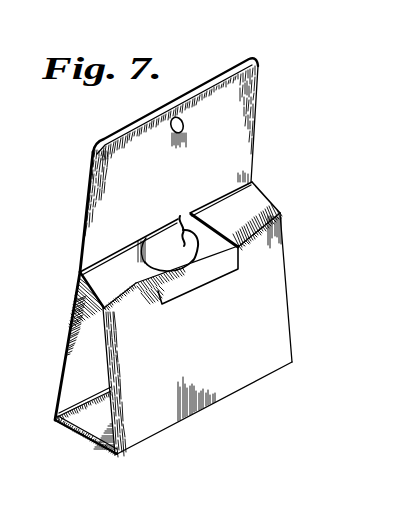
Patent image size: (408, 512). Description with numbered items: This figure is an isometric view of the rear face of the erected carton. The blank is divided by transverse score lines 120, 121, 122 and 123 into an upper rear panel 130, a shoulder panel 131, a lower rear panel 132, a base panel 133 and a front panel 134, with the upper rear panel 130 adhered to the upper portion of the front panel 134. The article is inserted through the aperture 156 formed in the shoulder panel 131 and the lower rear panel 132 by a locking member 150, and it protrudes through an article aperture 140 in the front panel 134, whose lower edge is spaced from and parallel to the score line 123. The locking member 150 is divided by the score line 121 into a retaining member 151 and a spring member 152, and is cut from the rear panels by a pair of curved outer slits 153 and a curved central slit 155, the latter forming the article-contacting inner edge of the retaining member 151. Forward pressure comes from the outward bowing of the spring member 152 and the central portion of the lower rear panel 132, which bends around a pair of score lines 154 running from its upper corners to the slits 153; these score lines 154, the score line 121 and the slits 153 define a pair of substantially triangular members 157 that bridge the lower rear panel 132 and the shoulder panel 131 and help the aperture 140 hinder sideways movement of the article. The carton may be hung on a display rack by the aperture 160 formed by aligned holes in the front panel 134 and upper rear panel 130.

The transverse score line 120 is at (226, 196).
The transverse score line 121 is at (266, 203).
The transverse score line 122 is at (133, 453).
The transverse score line 123 is at (72, 405).
The upper rear panel 130 is at (185, 187).
The shoulder panel 131 is at (251, 219).
The lower rear panel 132 is at (212, 353).
The base panel 133 is at (84, 428).
The front panel 134 is at (137, 121).
The article aperture 140 is at (160, 254).
The locking member 150 is at (197, 260).
The retaining member 151 is at (224, 255).
The spring member 152 is at (218, 286).
The curved outer slits 153 is at (206, 213).
The score lines 154 is at (255, 247).
The curved central slit 155 is at (182, 222).
The aperture 156 is at (97, 298).
The triangular members 157 is at (258, 232).
The hanging aperture 160 is at (173, 118).